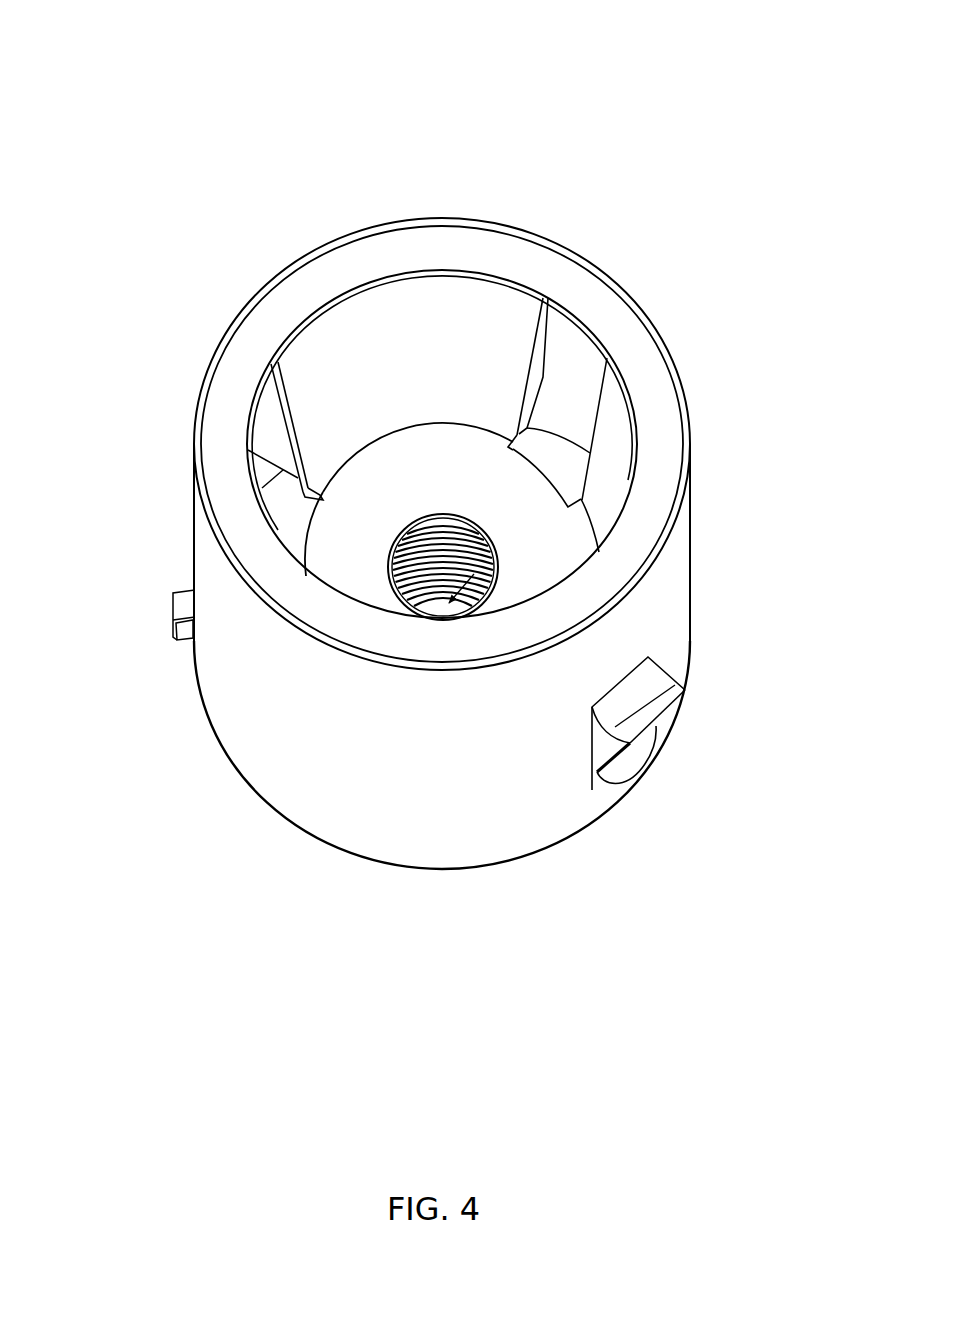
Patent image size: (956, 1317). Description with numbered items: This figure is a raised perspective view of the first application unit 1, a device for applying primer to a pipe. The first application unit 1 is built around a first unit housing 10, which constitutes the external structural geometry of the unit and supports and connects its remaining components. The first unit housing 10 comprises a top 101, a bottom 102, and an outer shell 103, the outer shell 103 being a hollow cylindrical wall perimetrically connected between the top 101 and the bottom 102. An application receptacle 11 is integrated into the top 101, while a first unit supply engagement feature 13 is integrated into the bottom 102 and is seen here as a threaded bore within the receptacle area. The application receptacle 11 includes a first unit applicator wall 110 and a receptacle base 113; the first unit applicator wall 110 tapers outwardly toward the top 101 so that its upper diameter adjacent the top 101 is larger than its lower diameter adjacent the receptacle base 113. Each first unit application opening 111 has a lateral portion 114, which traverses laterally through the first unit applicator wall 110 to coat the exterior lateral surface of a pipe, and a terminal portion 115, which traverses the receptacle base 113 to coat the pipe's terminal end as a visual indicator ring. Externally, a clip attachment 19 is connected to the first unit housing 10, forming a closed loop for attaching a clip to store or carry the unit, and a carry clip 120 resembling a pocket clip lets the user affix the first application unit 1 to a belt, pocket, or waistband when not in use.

The first application unit 1 is at (186, 80).
The first unit housing 10 is at (740, 392).
The top 101 is at (416, 246).
The bottom 102 is at (313, 853).
The outer shell 103 is at (470, 834).
The first unit applicator wall 110 is at (487, 352).
The first unit application opening 111 is at (502, 410).
The receptacle base 113 is at (437, 483).
The lateral portion 114 is at (560, 346).
The terminal portion 115 is at (556, 470).
The clip attachment 19 is at (173, 612).
The carry clip 120 is at (592, 718).
The first unit supply engagement feature 13 is at (466, 566).
The application receptacle 11 is at (553, 532).